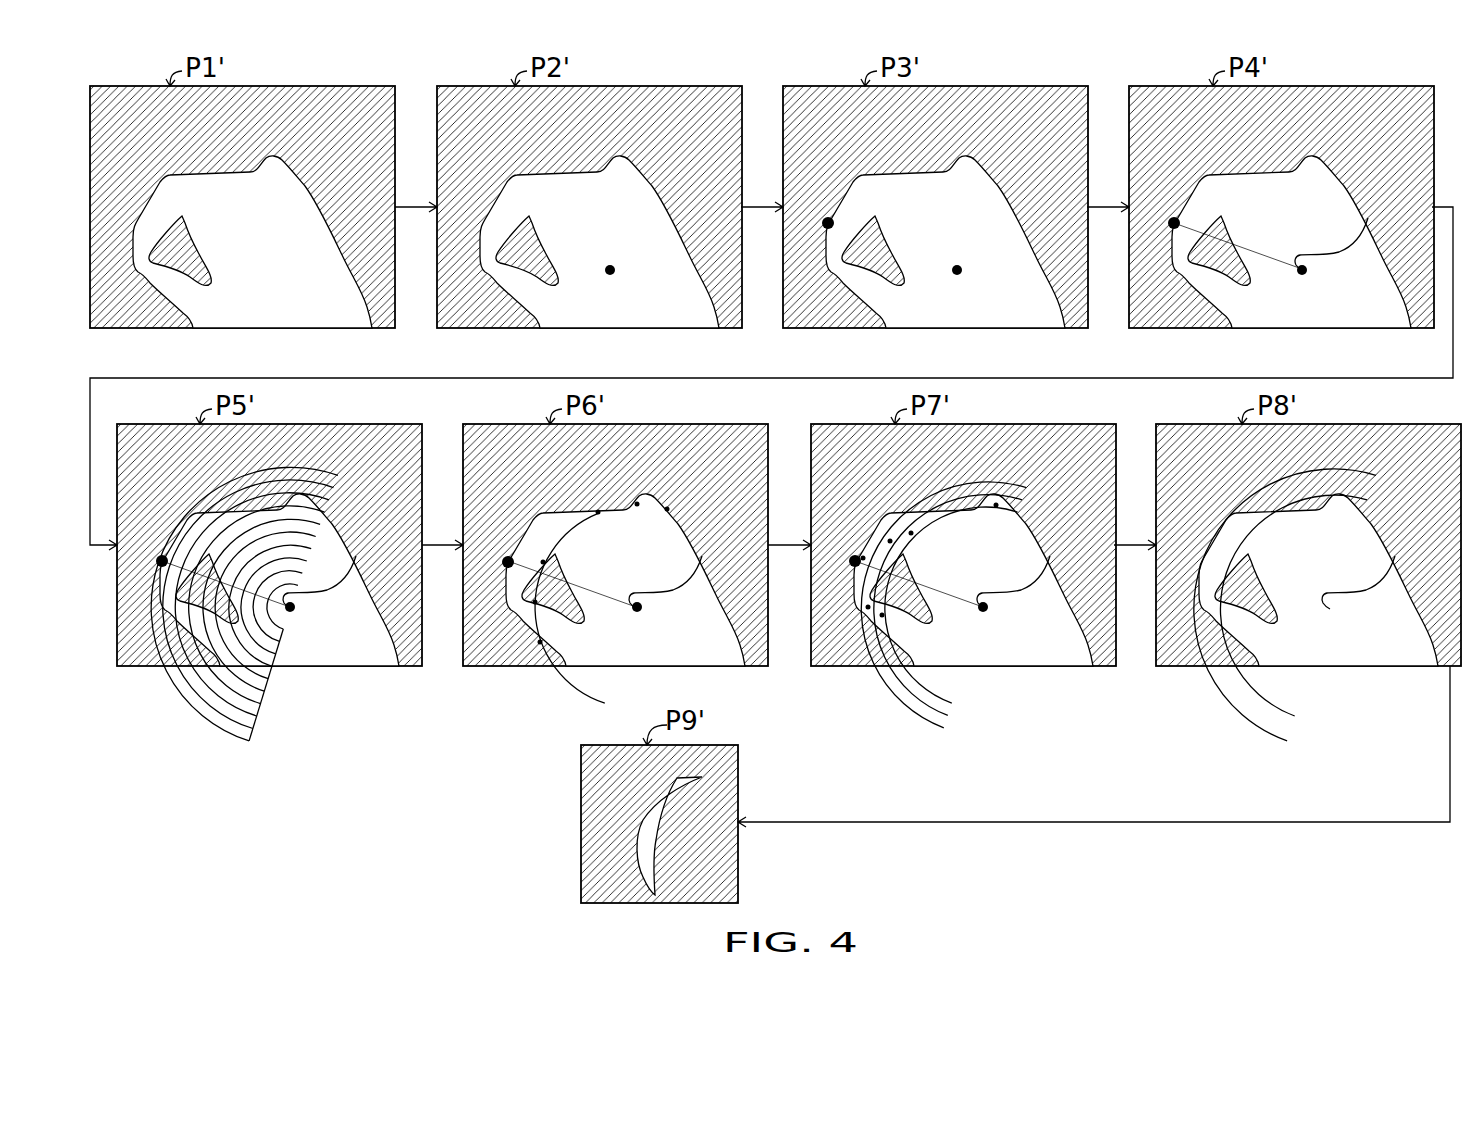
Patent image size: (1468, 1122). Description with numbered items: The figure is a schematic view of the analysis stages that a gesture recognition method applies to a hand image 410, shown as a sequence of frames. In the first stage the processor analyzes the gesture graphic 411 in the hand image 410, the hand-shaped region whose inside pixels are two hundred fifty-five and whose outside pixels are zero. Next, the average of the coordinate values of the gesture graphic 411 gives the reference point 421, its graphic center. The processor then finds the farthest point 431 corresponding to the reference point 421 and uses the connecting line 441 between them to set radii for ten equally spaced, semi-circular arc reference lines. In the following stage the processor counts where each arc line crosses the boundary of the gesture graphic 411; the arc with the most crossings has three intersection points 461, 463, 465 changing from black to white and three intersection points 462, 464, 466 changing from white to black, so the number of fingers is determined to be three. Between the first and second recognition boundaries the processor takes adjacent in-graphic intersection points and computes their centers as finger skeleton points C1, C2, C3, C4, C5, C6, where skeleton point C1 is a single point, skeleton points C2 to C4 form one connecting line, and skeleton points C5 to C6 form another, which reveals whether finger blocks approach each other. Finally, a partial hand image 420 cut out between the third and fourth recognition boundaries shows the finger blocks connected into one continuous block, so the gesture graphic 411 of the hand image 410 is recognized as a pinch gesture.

The hand image 410 is at (775, 359).
The gesture graphic 411 is at (243, 237).
The partial hand image 420 is at (611, 824).
The reference point 421 is at (802, 489).
The farthest point 431 is at (661, 310).
The reference line 441 is at (239, 133).
The intersection point 461 is at (692, 475).
The intersection point 462 is at (645, 482).
The intersection point 463 is at (593, 476).
The intersection point 464 is at (553, 519).
The intersection point 465 is at (501, 616).
The intersection point 466 is at (512, 651).
The finger skeleton point C1 is at (1019, 474).
The finger skeleton point C2 is at (950, 487).
The finger skeleton point C3 is at (918, 496).
The finger skeleton point C4 is at (884, 497).
The finger skeleton point C5 is at (851, 629).
The finger skeleton point C6 is at (842, 587).